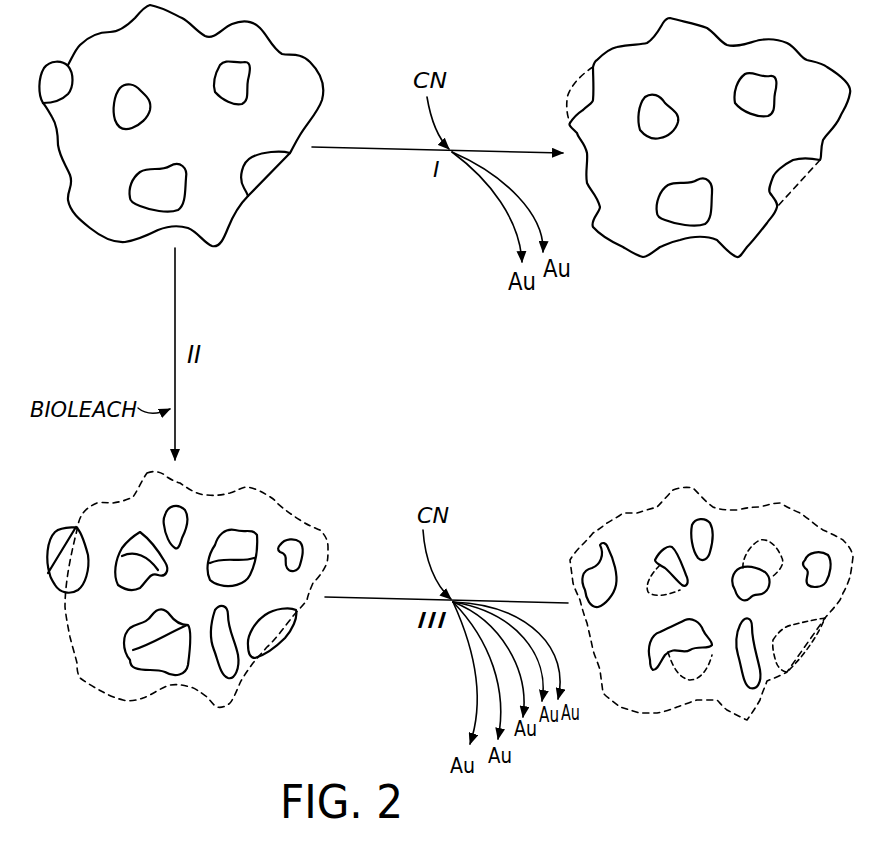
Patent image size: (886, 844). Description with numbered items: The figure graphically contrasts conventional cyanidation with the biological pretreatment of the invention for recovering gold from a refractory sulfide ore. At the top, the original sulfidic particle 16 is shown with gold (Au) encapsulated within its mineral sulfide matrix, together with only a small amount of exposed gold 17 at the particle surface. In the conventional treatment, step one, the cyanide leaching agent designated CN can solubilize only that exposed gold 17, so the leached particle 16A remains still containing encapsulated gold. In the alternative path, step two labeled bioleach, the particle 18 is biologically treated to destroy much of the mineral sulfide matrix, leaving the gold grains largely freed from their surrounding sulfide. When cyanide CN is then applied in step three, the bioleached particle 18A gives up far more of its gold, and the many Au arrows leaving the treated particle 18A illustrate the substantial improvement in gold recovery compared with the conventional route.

The original sulfidic particle 16 is at (300, 57).
The exposed gold 17 is at (45, 103).
The particle after conventional cyanide treatment 16A is at (707, 28).
The biologically treated particle 18 is at (267, 495).
The particle after bioleaching and cyanide treatment 18A is at (707, 495).